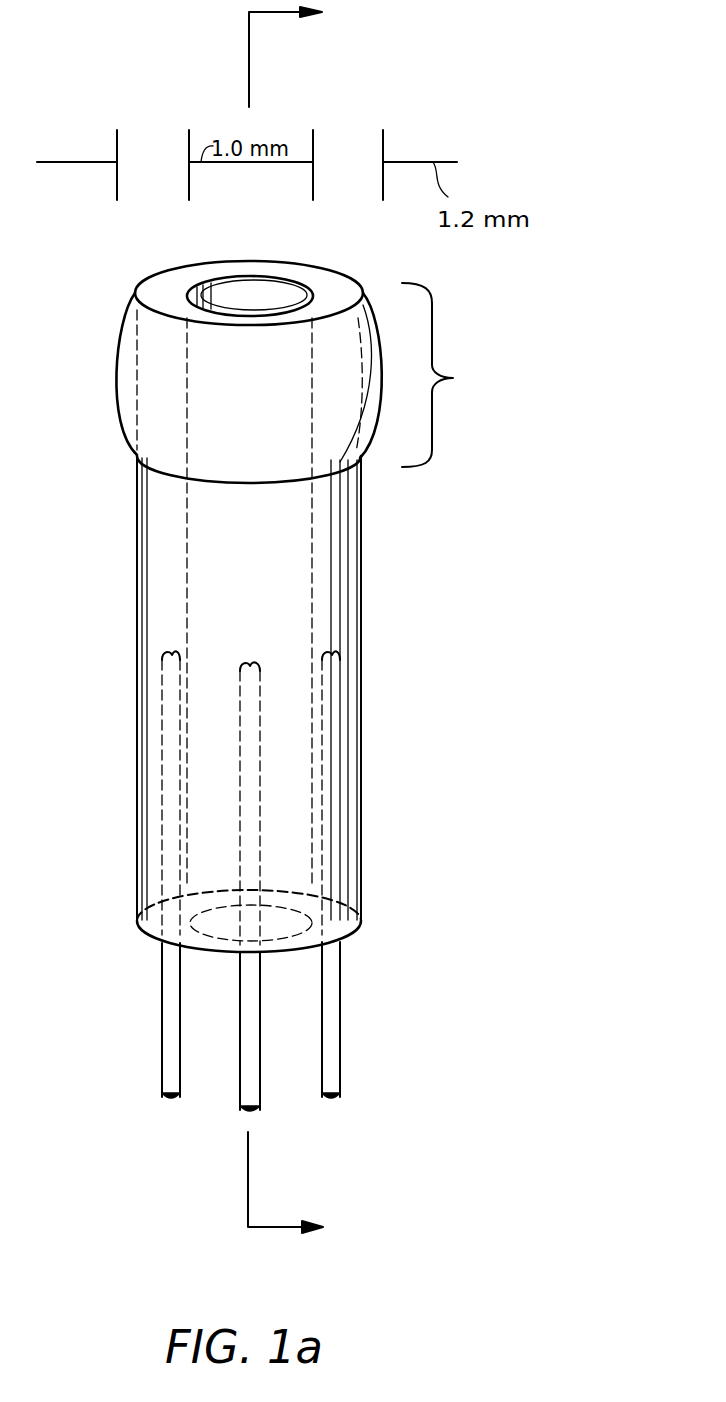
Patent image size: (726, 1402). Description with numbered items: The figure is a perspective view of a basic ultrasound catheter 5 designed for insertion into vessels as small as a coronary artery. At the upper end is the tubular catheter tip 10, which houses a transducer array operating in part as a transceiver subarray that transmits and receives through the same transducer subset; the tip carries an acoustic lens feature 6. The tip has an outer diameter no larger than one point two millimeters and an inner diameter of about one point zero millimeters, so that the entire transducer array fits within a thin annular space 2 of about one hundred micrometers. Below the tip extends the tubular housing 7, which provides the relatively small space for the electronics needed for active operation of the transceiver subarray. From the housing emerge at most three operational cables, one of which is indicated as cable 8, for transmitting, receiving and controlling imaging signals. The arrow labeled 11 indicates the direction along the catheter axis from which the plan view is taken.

The annular space 2 is at (157, 355).
The catheter 5 is at (287, 686).
The acoustic lens feature 6 is at (125, 408).
The tubular housing 7 is at (163, 575).
The cable 8 is at (181, 1028).
The catheter tip 10 is at (451, 375).
The viewing direction 11 is at (249, 80).